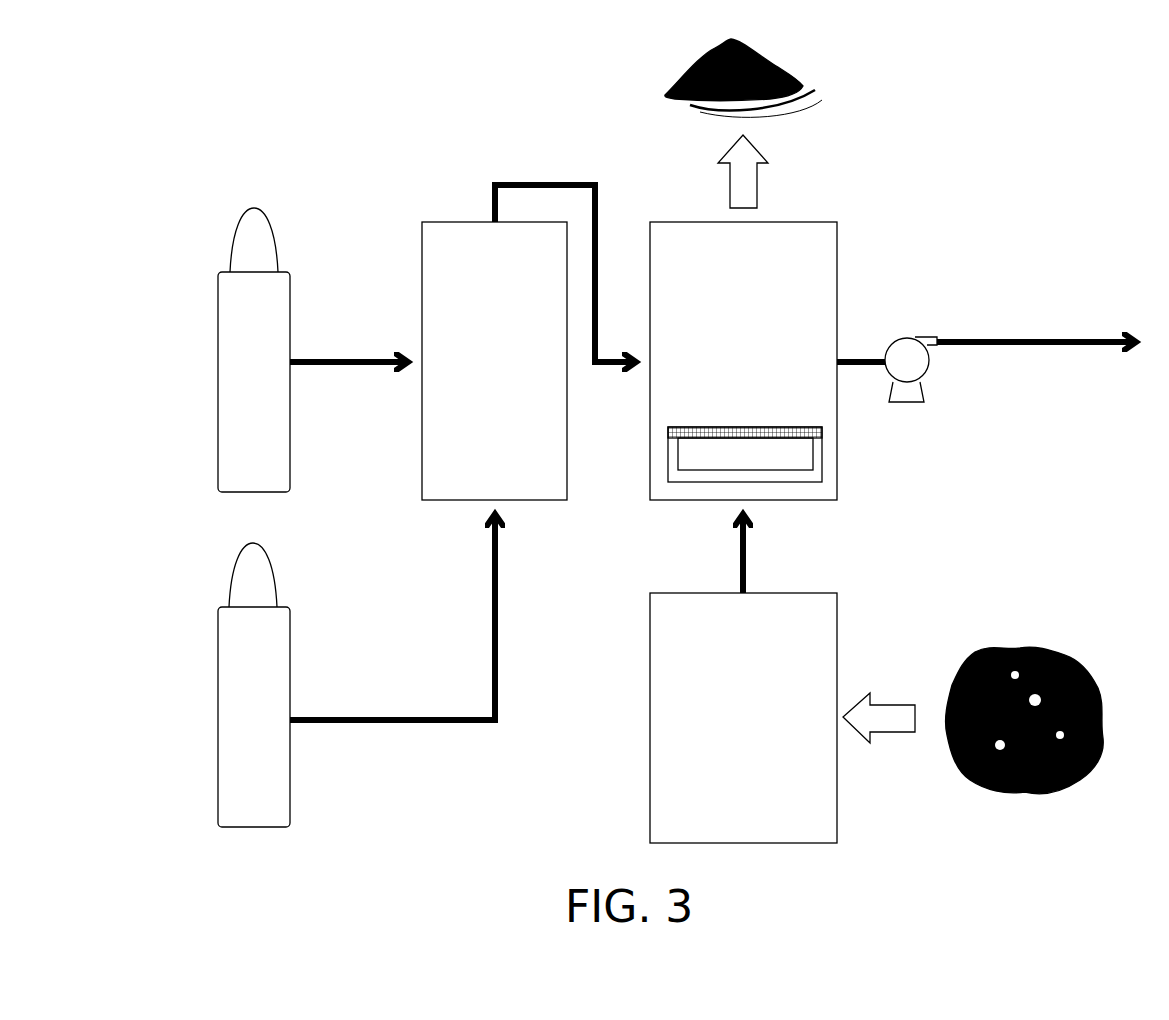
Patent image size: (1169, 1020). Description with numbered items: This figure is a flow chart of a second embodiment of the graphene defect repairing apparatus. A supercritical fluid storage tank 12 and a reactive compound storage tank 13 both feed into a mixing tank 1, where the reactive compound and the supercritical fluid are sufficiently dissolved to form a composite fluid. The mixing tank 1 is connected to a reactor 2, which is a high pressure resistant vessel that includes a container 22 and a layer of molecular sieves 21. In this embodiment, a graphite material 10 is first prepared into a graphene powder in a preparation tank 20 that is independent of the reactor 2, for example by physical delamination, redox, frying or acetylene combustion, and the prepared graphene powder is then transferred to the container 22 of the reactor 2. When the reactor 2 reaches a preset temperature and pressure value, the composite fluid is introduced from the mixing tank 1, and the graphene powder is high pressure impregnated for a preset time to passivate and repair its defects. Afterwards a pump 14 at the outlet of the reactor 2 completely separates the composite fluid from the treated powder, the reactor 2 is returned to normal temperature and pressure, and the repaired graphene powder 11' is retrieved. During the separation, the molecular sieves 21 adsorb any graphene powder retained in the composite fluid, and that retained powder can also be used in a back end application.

The mixing tank 1 is at (500, 259).
The reactor 2 is at (753, 259).
The graphite material 10 is at (1065, 650).
The repaired graphene powder 11' is at (706, 72).
The supercritical fluid storage tank 12 is at (237, 226).
The reactive compound storage tank 13 is at (245, 573).
The pump 14 is at (906, 338).
The preparation tank 20 is at (758, 739).
The molecular sieves 21 is at (822, 431).
The container 22 is at (668, 473).